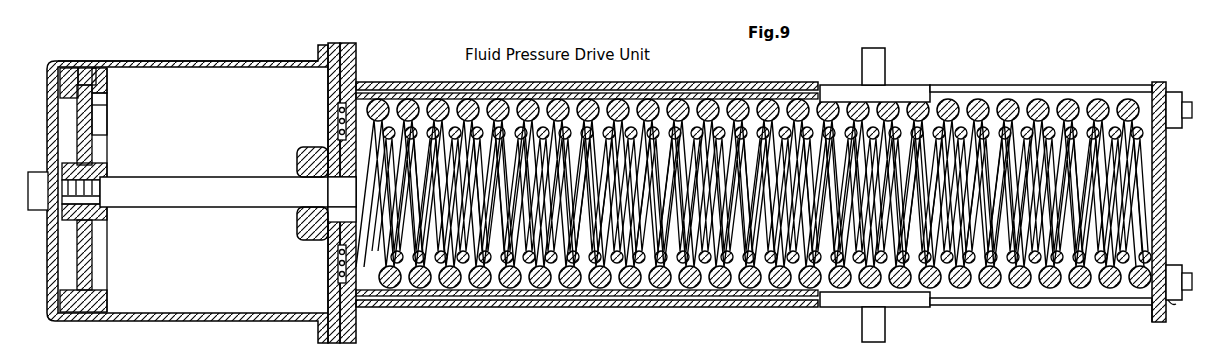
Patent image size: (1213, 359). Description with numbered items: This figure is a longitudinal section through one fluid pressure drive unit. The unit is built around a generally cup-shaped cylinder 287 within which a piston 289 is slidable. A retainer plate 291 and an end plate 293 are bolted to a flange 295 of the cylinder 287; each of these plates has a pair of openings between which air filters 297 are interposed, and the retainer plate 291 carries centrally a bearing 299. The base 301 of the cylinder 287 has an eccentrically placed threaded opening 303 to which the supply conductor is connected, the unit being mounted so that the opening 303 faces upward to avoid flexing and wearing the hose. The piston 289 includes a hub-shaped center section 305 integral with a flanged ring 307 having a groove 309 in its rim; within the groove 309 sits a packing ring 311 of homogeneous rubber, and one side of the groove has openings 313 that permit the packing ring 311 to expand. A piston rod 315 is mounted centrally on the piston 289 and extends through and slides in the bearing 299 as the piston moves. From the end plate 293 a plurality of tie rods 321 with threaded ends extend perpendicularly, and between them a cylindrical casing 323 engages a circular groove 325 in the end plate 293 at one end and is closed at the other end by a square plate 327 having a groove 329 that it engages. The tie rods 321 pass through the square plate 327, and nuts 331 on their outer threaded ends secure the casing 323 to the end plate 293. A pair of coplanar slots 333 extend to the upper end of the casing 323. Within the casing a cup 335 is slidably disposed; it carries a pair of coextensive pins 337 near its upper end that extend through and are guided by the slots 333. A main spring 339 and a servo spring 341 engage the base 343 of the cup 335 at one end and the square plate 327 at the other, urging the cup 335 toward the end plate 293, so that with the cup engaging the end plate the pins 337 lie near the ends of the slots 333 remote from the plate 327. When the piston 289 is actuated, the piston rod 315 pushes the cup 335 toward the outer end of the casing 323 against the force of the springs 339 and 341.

The cylinder 287 is at (222, 61).
The piston 289 is at (100, 74).
The retainer plate 291 is at (334, 100).
The end plate 293 is at (356, 70).
The flange 295 is at (328, 50).
The air filters 297 is at (338, 126).
The bearing 299 is at (306, 226).
The base 301 is at (52, 306).
The threaded opening 303 is at (36, 212).
The center section 305 is at (100, 168).
The flanged ring 307 is at (90, 262).
The groove 309 is at (92, 304).
The packing ring 311 is at (100, 104).
The openings 313 is at (68, 70).
The piston rod 315 is at (196, 177).
The tie rods 321 is at (1186, 100).
The cylindrical casing 323 is at (502, 306).
The circular groove 325 is at (358, 306).
The square plate 327 is at (1162, 320).
The groove 329 is at (1152, 310).
The nuts 331 is at (1174, 306).
The slots 333 is at (1018, 85).
The cup 335 is at (760, 90).
The pins 337 is at (868, 62).
The main spring 339 is at (682, 100).
The servo spring 341 is at (652, 100).
The base 343 is at (396, 96).